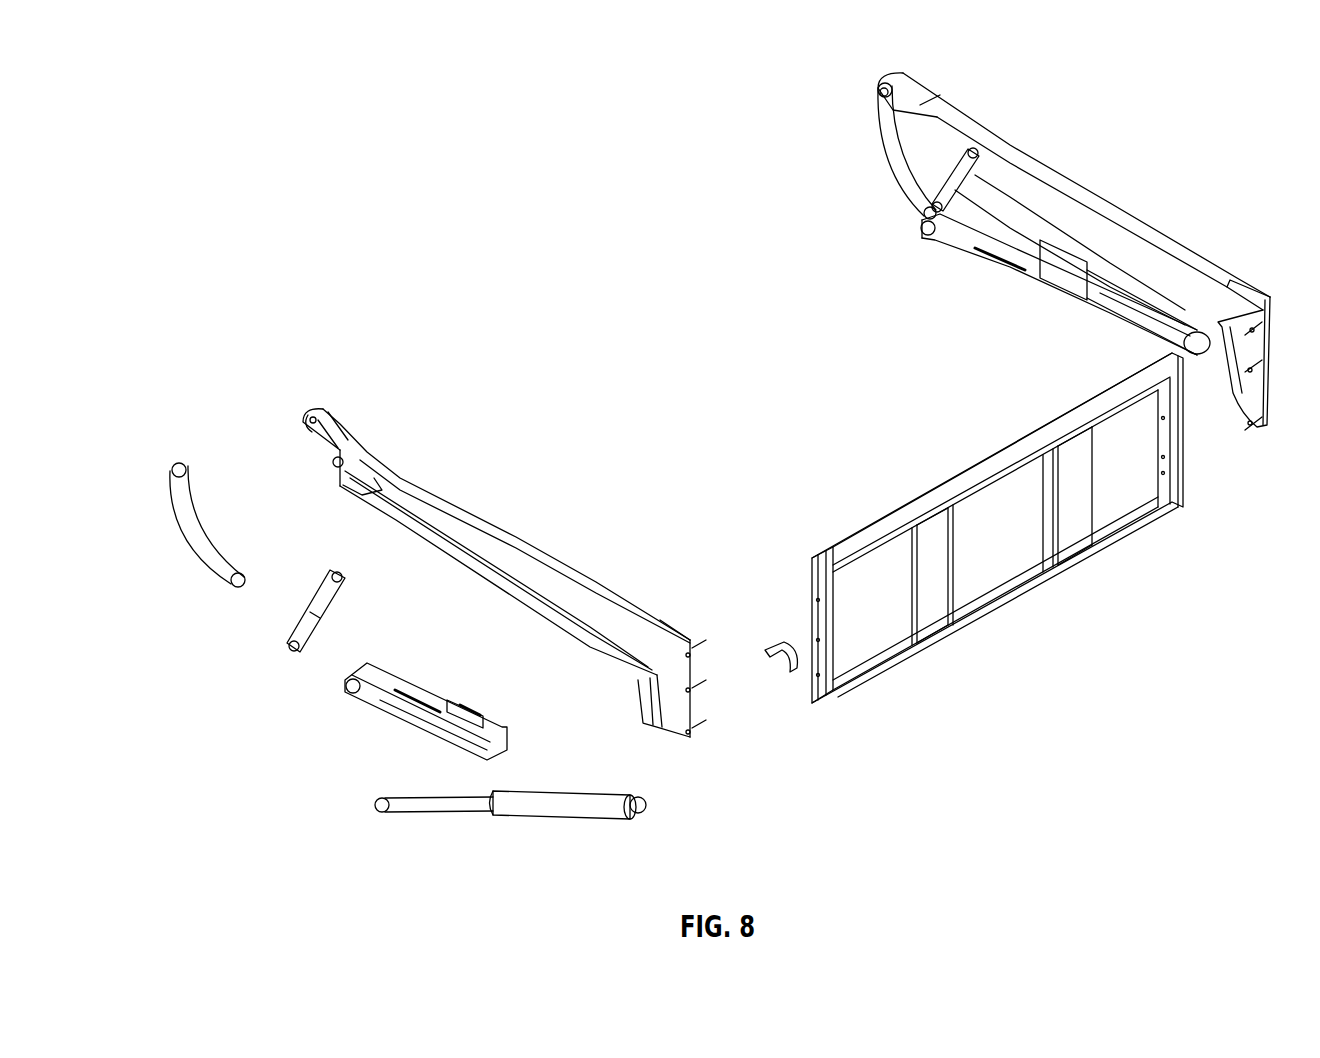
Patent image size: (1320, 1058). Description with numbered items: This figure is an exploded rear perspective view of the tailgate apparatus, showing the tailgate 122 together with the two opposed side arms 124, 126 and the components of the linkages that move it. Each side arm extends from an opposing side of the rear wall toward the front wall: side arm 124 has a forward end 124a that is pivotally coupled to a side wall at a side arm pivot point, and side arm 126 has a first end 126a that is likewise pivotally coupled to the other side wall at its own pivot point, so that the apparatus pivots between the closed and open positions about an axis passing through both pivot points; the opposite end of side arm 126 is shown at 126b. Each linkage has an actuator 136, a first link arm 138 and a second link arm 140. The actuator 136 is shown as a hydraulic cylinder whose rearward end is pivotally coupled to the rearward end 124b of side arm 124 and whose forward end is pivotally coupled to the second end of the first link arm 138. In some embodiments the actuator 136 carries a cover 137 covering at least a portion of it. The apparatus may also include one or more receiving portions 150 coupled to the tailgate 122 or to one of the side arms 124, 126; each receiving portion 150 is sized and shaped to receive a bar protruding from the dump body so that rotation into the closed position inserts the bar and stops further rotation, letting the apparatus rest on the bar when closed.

The tailgate 122 is at (978, 580).
The side arm 124 is at (516, 518).
The forward end 124a is at (343, 408).
The rearward end 124b is at (660, 602).
The side arm 126 is at (1037, 148).
The first end 126a is at (927, 72).
The second end of second lift arm 126b is at (1232, 268).
The actuator 136 is at (503, 808).
The cover 137 is at (383, 705).
The first link arm 138 is at (292, 645).
The second link arm 140 is at (193, 530).
The receiving portion 150 is at (780, 656).